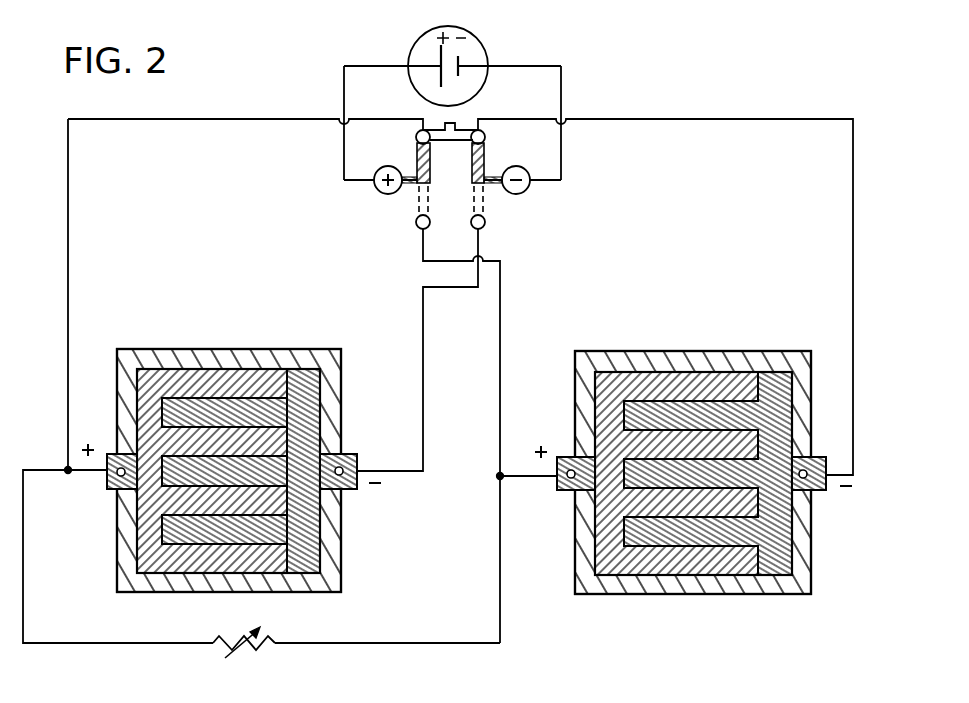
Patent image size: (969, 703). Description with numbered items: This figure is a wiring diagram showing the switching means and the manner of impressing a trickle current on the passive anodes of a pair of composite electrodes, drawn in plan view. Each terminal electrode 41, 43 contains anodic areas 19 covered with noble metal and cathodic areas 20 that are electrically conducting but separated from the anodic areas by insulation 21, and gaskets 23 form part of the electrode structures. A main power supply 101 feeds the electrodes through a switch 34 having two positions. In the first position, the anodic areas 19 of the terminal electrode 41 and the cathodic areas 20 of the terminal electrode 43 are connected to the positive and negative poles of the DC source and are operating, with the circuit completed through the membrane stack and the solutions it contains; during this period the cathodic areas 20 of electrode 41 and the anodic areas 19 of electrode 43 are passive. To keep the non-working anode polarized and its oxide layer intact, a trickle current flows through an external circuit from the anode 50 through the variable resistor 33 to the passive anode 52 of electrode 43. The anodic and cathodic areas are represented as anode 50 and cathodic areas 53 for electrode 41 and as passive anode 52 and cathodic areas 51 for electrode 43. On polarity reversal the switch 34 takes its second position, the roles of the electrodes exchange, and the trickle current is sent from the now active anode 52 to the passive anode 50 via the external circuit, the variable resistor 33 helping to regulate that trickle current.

The anodic areas 19 is at (177, 438).
The cathodic areas 20 is at (274, 468).
The insulation 21 is at (116, 492).
The gaskets 23 is at (192, 356).
The variable resistor 33 is at (245, 650).
The switch 34 is at (460, 126).
The terminal electrode 41 is at (310, 597).
The terminal electrode 43 is at (725, 599).
The anode 50 is at (122, 454).
The cathodic areas 51 is at (775, 503).
The passive anode 52 is at (607, 562).
The cathodic areas 53 is at (303, 528).
The main power supply 101 is at (476, 38).